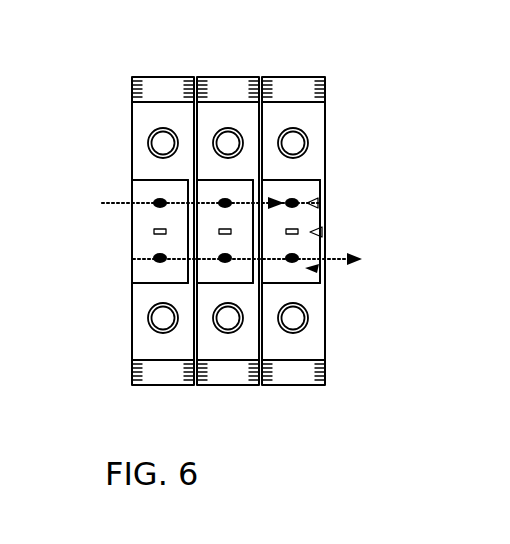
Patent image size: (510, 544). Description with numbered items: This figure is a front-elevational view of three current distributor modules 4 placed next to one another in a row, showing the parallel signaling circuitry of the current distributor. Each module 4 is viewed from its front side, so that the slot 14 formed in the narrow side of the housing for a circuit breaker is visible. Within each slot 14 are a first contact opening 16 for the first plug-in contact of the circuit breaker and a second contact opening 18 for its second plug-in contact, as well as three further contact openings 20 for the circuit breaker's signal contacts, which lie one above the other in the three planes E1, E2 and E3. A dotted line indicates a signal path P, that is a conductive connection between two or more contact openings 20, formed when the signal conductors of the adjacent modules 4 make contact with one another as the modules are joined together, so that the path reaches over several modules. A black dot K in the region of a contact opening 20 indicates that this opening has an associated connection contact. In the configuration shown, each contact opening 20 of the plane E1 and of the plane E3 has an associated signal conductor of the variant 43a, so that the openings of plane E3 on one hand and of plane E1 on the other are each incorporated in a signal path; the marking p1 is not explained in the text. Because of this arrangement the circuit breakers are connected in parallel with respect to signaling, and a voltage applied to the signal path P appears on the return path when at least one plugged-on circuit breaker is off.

The current distributor module 4 is at (168, 76).
The first contact opening 16 is at (152, 134).
The second contact opening 18 is at (152, 326).
The slot 14 is at (284, 117).
The contact openings 20 is at (154, 204).
The signal conductor variant 43a is at (172, 267).
The signal path P is at (103, 203).
The black dot K is at (288, 201).
The third plane E3 is at (318, 203).
The second plane E2 is at (322, 232).
The first plane E1 is at (319, 268).
The point p1 is at (273, 265).